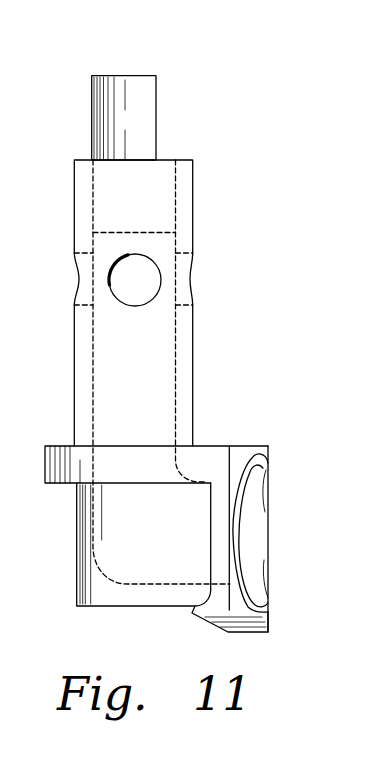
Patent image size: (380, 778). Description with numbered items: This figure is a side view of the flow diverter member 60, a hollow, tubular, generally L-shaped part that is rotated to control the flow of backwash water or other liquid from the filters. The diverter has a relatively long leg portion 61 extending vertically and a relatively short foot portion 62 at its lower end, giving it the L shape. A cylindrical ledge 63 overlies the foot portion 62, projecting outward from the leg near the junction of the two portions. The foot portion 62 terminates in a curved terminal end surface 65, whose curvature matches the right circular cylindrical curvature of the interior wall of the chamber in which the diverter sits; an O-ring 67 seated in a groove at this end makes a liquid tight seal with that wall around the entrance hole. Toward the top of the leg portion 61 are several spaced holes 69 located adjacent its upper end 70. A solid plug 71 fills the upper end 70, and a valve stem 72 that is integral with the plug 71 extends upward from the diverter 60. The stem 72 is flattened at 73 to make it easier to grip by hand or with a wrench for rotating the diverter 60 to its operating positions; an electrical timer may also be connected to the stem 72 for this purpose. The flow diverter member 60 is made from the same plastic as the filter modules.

The flow diverter member 60 is at (222, 183).
The leg portion 61 is at (193, 340).
The foot portion 62 is at (262, 633).
The cylindrical ledge 63 is at (46, 465).
The curved terminal end surface 65 is at (268, 447).
The O-ring 67 is at (246, 520).
The spaced holes 69 is at (193, 278).
The upper end 70 is at (87, 165).
The solid plug 71 is at (148, 192).
The valve stem 72 is at (119, 75).
The flattened portion 73 is at (157, 102).